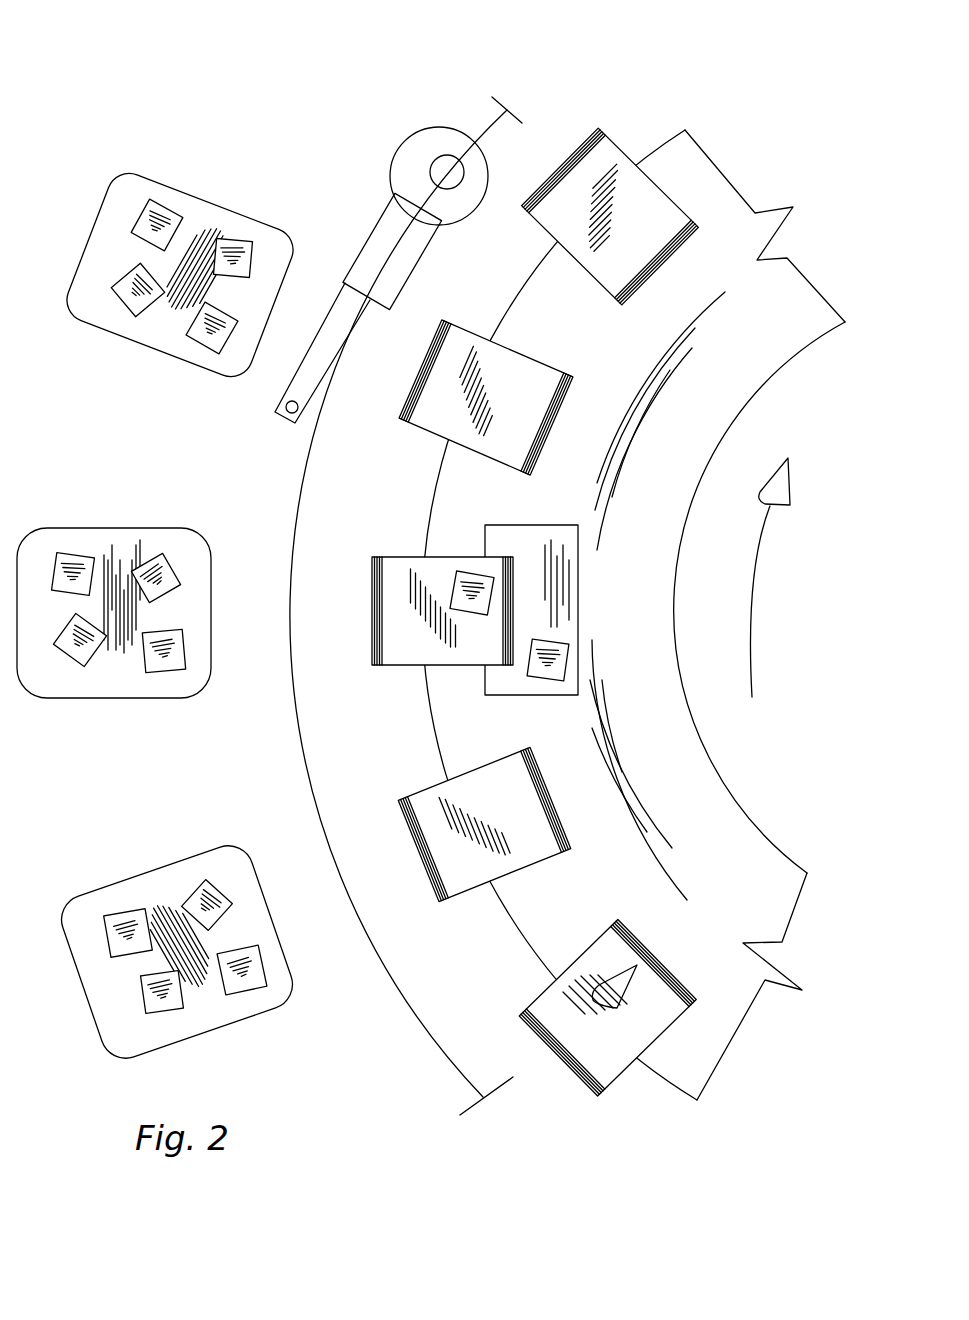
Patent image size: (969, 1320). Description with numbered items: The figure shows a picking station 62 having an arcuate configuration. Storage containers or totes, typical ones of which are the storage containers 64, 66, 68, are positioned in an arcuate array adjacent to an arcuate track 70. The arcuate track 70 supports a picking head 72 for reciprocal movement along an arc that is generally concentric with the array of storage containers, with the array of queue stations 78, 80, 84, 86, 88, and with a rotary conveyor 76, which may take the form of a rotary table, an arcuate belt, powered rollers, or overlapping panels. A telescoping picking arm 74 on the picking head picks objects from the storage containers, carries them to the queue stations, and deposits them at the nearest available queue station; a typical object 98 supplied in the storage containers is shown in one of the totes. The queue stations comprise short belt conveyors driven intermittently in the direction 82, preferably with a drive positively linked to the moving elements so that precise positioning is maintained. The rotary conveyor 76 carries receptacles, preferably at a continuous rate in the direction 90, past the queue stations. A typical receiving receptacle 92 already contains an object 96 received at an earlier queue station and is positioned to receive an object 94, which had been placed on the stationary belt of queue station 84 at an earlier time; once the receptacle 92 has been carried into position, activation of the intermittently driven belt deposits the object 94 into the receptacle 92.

The picking station 62 is at (175, 105).
The storage container 64 is at (118, 342).
The storage container 66 is at (133, 528).
The storage container 68 is at (208, 933).
The arcuate track 70 is at (298, 722).
The picking head 72 is at (442, 127).
The telescoping picking arm 74 is at (372, 232).
The rotary conveyor 76 is at (743, 904).
The queue station 78 is at (557, 1065).
The queue station 80 is at (420, 857).
The direction of queue station drive 82 is at (635, 1057).
The queue station 84 is at (432, 611).
The queue station 86 is at (423, 363).
The queue station 88 is at (619, 148).
The direction of rotary conveyor travel 90 is at (752, 640).
The receiving receptacle 92 is at (655, 635).
The object 94 is at (473, 570).
The object 96 is at (537, 677).
The object 98 is at (243, 985).